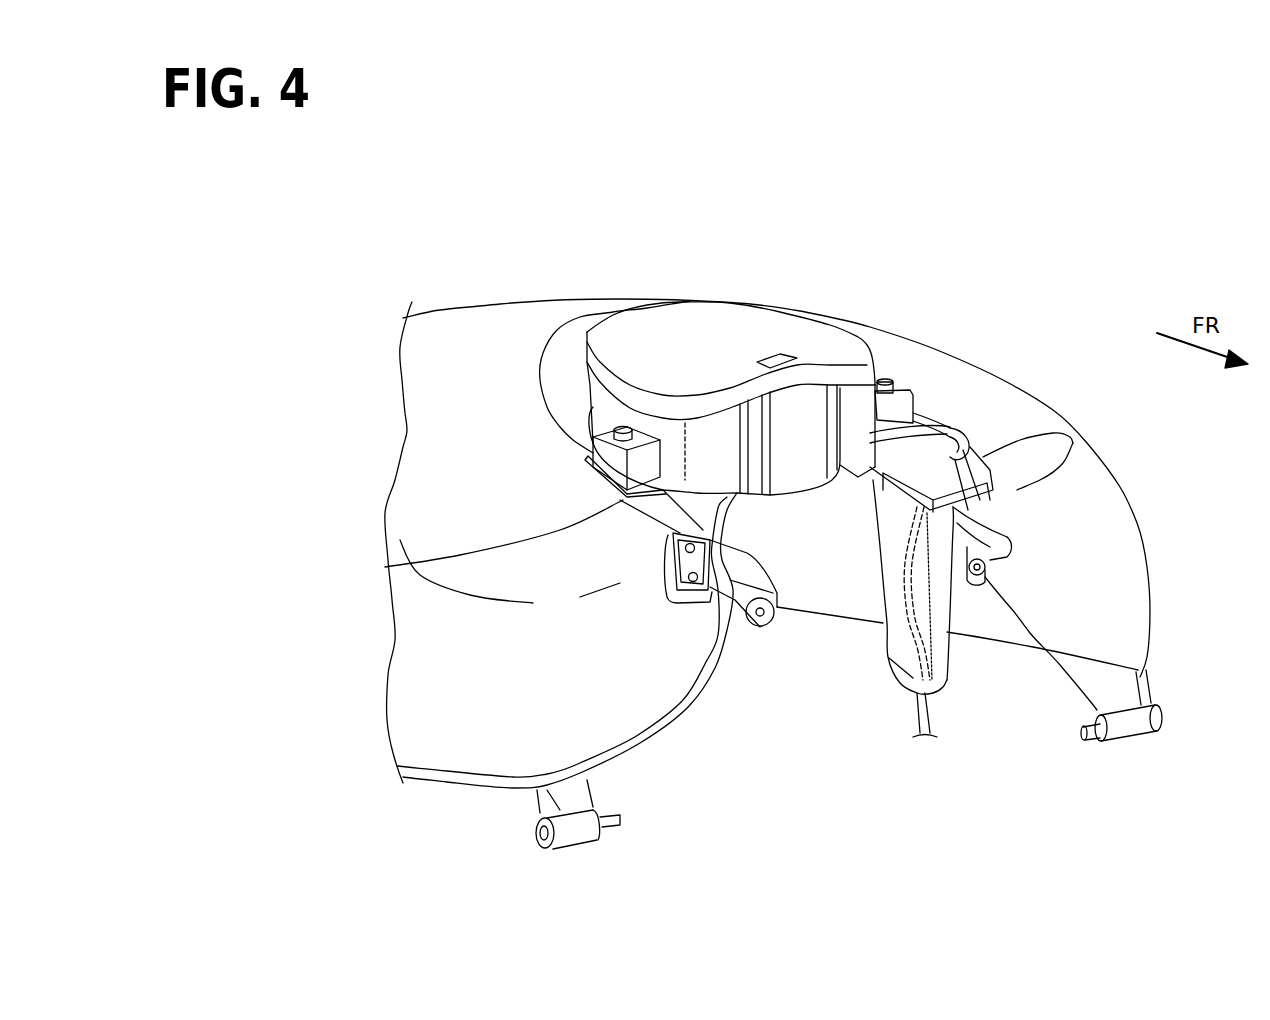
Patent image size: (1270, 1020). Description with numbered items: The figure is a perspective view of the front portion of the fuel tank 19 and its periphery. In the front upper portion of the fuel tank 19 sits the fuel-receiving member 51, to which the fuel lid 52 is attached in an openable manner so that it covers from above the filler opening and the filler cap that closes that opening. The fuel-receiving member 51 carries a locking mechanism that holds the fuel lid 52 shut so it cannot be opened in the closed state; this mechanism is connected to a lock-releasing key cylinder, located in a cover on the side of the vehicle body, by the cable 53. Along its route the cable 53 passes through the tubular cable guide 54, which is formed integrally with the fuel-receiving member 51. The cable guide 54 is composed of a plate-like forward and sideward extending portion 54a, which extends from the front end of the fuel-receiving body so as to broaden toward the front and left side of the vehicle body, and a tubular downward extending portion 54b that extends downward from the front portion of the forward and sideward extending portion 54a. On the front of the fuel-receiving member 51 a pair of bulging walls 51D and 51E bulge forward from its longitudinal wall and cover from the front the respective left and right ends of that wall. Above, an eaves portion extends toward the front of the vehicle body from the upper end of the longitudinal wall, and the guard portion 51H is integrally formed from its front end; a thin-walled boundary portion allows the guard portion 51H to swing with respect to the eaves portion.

The fuel tank 19 is at (430, 480).
The fuel-receiving member 51 is at (596, 405).
The guard portion 51H is at (803, 413).
The bulging wall 51D is at (893, 390).
The bulging wall 51E is at (700, 447).
The fuel lid 52 is at (683, 323).
The cable 53 is at (1017, 490).
The cable guide 54 is at (897, 677).
The forward and sideward extending portion 54a is at (983, 457).
The downward extending portion 54b is at (947, 660).